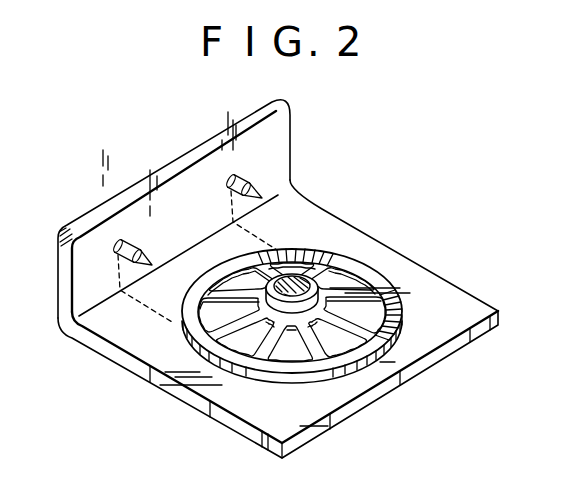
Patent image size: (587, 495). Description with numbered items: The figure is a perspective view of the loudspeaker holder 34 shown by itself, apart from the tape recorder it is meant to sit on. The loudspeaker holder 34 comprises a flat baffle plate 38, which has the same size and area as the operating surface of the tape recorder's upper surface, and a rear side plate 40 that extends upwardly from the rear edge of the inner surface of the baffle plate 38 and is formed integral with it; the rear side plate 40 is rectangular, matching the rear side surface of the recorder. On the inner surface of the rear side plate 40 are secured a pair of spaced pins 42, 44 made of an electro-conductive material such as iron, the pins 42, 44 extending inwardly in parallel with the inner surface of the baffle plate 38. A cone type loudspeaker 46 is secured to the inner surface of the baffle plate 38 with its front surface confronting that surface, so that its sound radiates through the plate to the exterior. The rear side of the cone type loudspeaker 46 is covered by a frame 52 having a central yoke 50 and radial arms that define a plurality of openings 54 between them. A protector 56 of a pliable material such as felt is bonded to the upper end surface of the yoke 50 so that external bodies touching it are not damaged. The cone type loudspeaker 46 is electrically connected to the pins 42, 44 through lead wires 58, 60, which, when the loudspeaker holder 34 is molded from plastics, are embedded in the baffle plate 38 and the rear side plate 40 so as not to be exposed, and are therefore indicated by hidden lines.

The loudspeaker holder 34 is at (278, 279).
The baffle plate 38 is at (433, 341).
The rear side plate 40 is at (172, 188).
The pin 42 is at (132, 246).
The pin 44 is at (233, 171).
The cone type loudspeaker 46 is at (316, 315).
The yoke 50 is at (349, 259).
The frame 52 is at (404, 311).
The openings 54 is at (306, 362).
The protector 56 is at (305, 275).
The lead wire 58 is at (172, 325).
The lead wire 60 is at (253, 232).